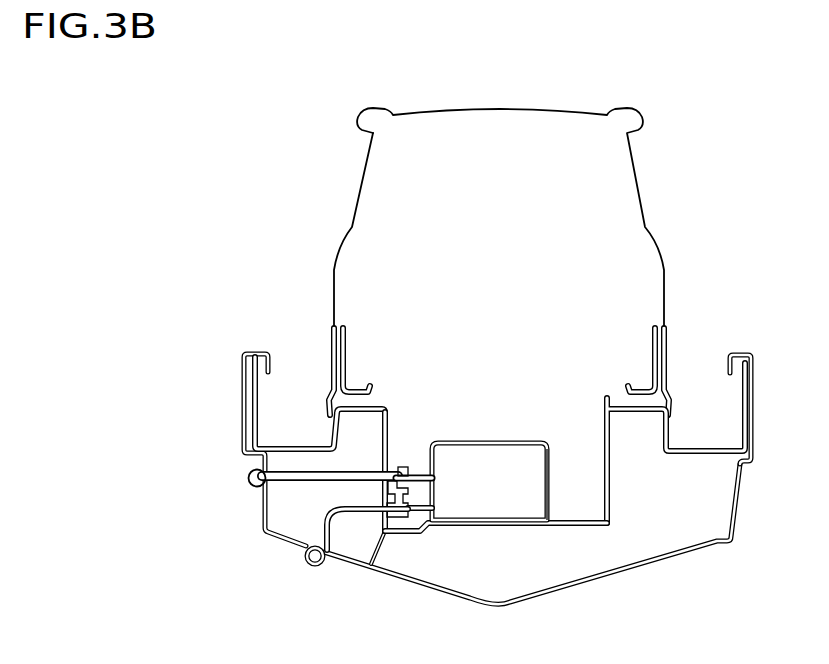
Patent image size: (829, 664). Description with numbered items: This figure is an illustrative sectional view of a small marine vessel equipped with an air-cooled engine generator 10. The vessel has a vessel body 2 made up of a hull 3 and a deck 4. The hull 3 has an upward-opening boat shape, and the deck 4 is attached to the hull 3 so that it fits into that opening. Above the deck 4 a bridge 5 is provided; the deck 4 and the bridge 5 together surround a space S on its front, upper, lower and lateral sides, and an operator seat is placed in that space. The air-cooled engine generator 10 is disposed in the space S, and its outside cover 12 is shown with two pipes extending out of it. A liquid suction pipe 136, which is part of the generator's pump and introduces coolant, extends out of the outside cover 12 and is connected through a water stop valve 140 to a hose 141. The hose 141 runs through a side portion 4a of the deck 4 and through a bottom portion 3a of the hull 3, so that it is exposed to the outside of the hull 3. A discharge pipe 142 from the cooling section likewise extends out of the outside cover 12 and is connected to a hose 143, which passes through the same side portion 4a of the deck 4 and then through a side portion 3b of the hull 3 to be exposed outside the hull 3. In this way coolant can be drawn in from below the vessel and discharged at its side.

The vessel body 2 is at (247, 464).
The hull 3 is at (263, 531).
The bottom portion of the hull 3a is at (412, 588).
The side portion of the hull 3b is at (262, 505).
The deck 4 is at (293, 447).
The side portion of the deck 4a is at (384, 443).
The bridge 5 is at (346, 211).
The air-cooled engine generator 10 is at (550, 449).
The outside cover 12 is at (549, 485).
The liquid suction pipe 136 is at (425, 529).
The water stop valve 140 is at (397, 519).
The hose 141 is at (352, 519).
The discharge pipe 142 is at (417, 473).
The hose 143 is at (298, 483).
The space S is at (505, 338).